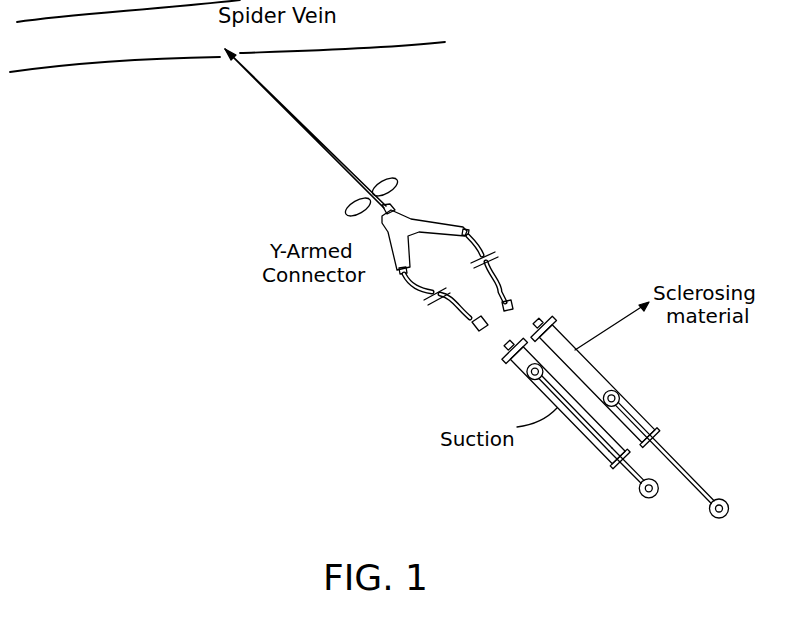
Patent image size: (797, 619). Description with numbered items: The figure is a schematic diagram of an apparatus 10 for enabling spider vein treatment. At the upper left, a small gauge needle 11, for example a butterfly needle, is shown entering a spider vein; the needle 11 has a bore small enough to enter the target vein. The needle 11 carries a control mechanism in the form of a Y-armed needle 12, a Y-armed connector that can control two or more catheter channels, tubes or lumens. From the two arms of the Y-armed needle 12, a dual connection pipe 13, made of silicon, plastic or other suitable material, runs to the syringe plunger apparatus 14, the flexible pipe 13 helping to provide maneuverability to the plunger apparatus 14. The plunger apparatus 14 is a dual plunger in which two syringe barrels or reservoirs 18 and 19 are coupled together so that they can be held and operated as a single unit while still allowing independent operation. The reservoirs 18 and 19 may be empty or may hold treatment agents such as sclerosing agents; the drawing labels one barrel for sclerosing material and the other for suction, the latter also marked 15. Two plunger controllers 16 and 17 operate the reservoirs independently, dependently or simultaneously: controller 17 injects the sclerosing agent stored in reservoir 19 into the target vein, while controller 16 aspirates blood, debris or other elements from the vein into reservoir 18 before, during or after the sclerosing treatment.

The apparatus 10 is at (572, 203).
The small gauge needle 11 is at (328, 147).
The Y-armed needle 12 is at (440, 222).
The dual connection pipe 13 is at (500, 277).
The plunger apparatus 14 is at (583, 332).
The suction syringe 15 is at (565, 405).
The plunger controller 16 is at (680, 462).
The plunger controller 17 is at (633, 477).
The reservoir 18 is at (610, 382).
The reservoir 19 is at (580, 430).